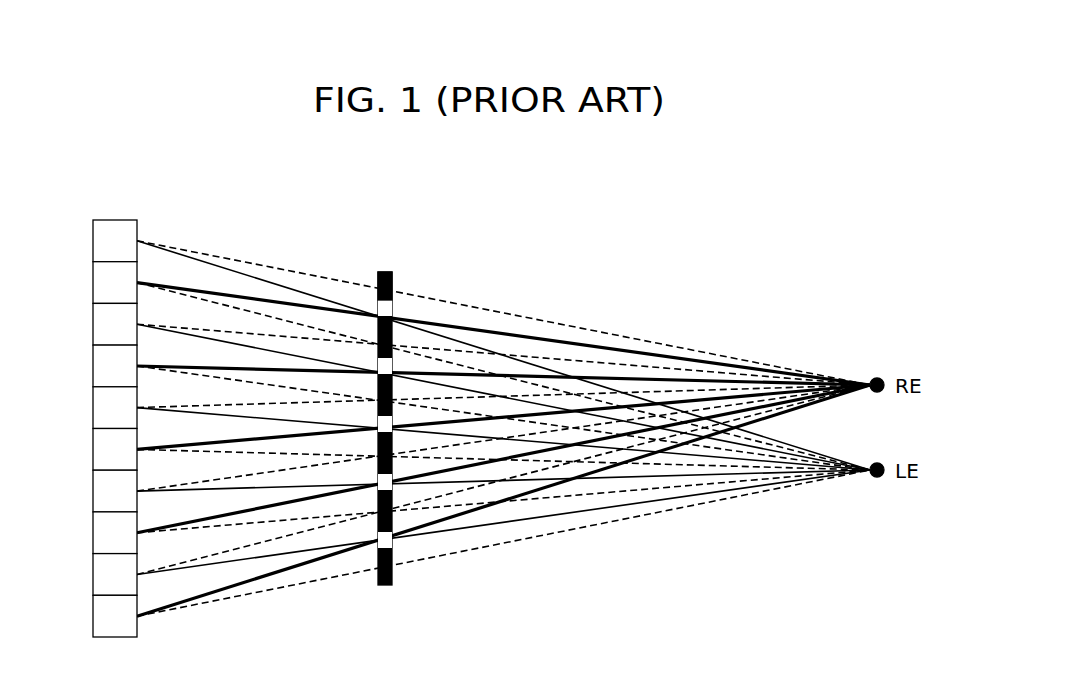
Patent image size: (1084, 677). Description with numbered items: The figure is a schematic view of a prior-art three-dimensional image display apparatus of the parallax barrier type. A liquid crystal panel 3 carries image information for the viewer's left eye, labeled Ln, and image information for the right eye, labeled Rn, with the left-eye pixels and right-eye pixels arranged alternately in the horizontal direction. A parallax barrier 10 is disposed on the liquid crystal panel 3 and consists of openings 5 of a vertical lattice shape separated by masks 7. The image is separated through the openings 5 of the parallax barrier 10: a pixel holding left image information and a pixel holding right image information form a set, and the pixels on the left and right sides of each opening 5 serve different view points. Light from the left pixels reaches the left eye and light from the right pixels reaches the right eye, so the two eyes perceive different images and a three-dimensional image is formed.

The liquid crystal panel 3 is at (114, 220).
The parallax barrier 10 is at (420, 400).
The mask 7 is at (393, 283).
The opening 5 is at (396, 309).